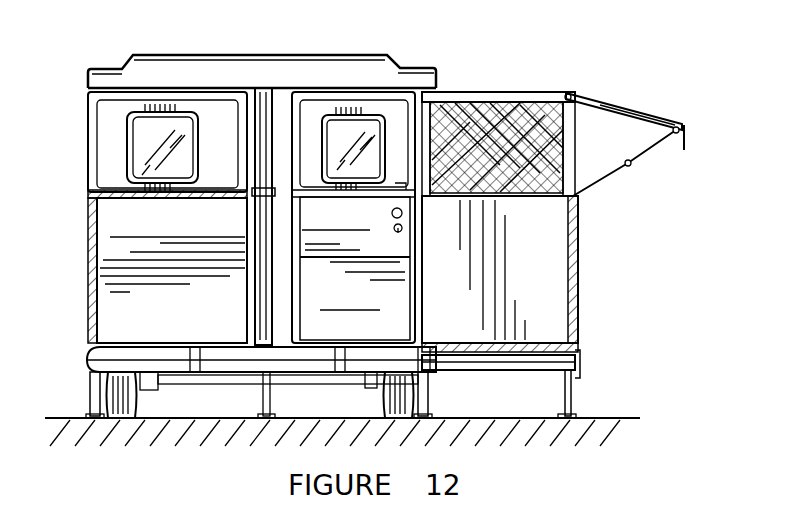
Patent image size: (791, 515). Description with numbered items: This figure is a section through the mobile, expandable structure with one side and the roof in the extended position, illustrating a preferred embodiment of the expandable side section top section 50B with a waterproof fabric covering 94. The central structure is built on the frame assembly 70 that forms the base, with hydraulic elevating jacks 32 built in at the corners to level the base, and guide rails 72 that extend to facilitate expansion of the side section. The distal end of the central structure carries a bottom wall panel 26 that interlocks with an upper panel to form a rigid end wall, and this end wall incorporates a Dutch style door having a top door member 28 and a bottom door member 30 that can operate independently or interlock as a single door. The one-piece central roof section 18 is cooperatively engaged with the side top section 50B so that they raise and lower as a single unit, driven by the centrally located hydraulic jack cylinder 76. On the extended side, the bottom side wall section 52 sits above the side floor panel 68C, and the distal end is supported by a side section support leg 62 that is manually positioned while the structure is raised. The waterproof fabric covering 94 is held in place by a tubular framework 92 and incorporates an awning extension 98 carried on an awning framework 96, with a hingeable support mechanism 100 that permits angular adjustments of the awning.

The central roof section 18 is at (267, 56).
The top door member 28 is at (400, 108).
The bottom wall panel 26 is at (153, 244).
The bottom door member 30 is at (350, 318).
The hydraulic jack cylinder 76 is at (262, 305).
The waterproof fabric covering 94 is at (470, 112).
The tubular framework 92 is at (573, 94).
The awning framework 96 is at (645, 118).
The awning extension 98 is at (686, 140).
The hingeable support mechanism 100 is at (631, 167).
The top section 50B is at (622, 92).
The bottom side wall section 52 is at (592, 311).
The side floor panel 68C is at (548, 274).
The frame assembly 70 is at (295, 360).
The hydraulic elevating jacks 32 is at (93, 402).
The guide rails 72 is at (497, 363).
The side section support legs 62 is at (571, 401).